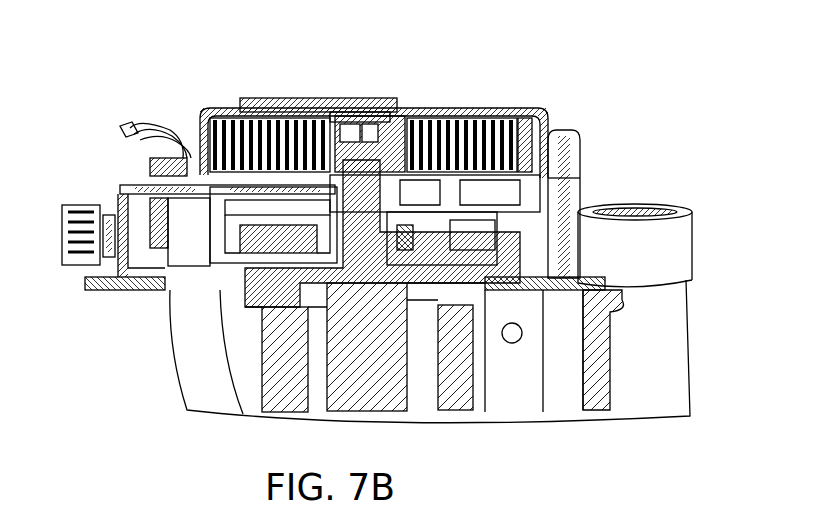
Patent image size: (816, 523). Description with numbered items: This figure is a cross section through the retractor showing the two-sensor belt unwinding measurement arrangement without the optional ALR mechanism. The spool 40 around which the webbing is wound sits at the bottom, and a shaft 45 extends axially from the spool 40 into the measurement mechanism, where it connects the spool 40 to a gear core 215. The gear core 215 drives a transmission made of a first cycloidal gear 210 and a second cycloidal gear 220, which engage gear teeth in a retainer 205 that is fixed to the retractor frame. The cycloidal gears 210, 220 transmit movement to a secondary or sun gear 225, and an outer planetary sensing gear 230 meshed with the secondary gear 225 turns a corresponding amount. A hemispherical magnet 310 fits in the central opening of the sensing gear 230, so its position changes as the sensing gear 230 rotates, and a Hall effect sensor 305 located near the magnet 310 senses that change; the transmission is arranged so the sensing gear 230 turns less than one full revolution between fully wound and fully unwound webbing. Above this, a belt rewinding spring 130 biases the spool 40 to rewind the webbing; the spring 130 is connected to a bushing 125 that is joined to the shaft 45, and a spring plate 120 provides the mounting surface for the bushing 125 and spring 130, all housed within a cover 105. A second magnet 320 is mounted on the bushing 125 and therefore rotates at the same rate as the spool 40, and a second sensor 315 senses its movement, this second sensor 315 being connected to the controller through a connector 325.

The spool 40 is at (363, 380).
The shaft 45 is at (363, 258).
The cover 105 is at (450, 112).
The spring plate 120 is at (573, 167).
The bushing 125 is at (387, 135).
The belt rewinding spring 130 is at (520, 133).
The retainer 205 is at (587, 207).
The first cycloidal gear 210 is at (250, 218).
The gear core 215 is at (405, 160).
The second cycloidal gear 220 is at (203, 223).
The secondary gear 225 is at (203, 160).
The sensing gear 230 is at (165, 213).
The Hall effect sensor 305 is at (160, 168).
The magnet 310 is at (120, 193).
The second sensor 315 is at (343, 123).
The second magnet 320 is at (357, 133).
The connector 325 is at (62, 237).